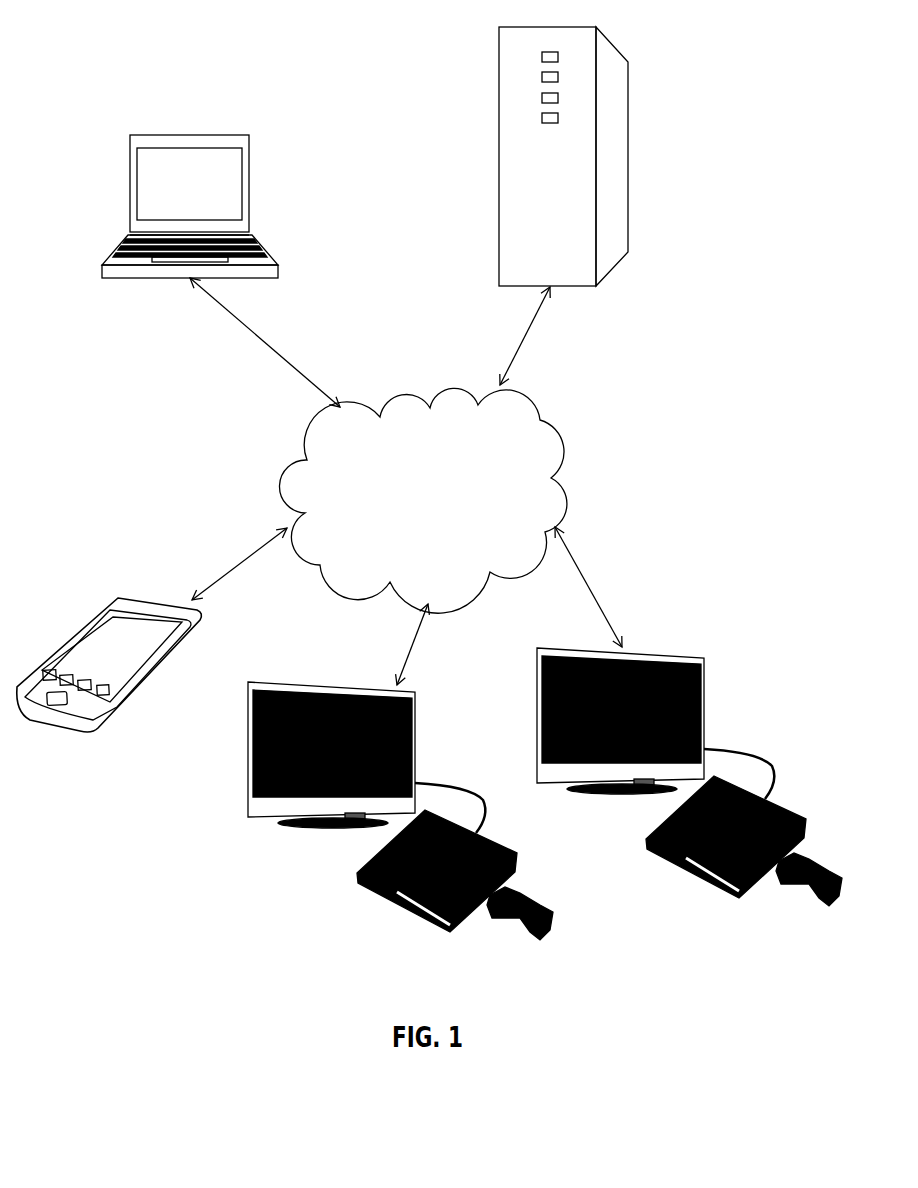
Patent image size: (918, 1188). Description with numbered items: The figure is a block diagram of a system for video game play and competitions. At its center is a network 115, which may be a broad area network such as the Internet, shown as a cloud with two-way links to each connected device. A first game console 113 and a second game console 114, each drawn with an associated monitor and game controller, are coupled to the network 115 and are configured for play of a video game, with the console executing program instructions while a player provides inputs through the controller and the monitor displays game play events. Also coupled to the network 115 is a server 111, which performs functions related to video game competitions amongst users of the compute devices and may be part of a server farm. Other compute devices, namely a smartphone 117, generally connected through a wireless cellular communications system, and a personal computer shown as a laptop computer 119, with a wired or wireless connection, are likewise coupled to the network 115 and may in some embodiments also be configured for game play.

The server 111 is at (628, 155).
The first game console 113 is at (783, 810).
The second game console 114 is at (490, 840).
The network 115 is at (572, 492).
The smartphone 117 is at (160, 665).
The laptop computer 119 is at (212, 135).